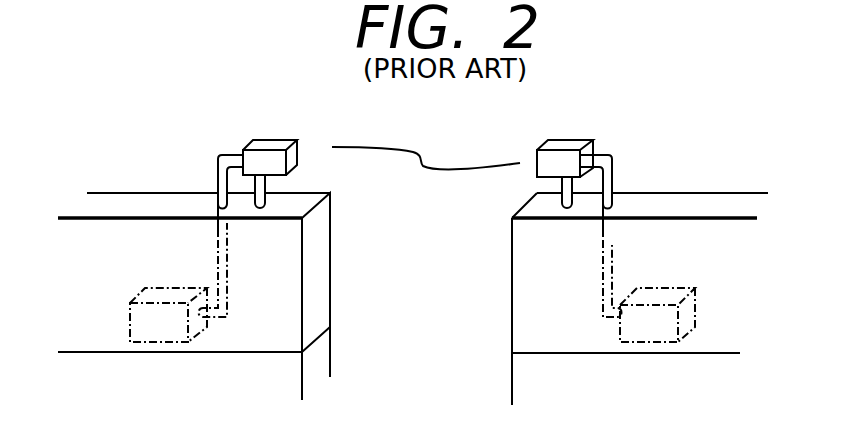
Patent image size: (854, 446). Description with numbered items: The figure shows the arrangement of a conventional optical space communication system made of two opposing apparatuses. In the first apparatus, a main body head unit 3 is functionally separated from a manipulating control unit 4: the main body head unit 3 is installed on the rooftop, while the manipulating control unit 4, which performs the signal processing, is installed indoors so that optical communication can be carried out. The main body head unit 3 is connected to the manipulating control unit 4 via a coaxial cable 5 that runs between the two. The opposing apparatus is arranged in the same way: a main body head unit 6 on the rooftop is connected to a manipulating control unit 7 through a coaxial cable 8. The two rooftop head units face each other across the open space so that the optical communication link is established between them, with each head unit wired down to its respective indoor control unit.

The main body head unit 3 is at (278, 137).
The manipulating control unit 4 is at (158, 290).
The coaxial cable 5 is at (228, 278).
The main body head unit 6 is at (573, 142).
The manipulating control unit 7 is at (690, 288).
The coaxial cable 8 is at (603, 258).